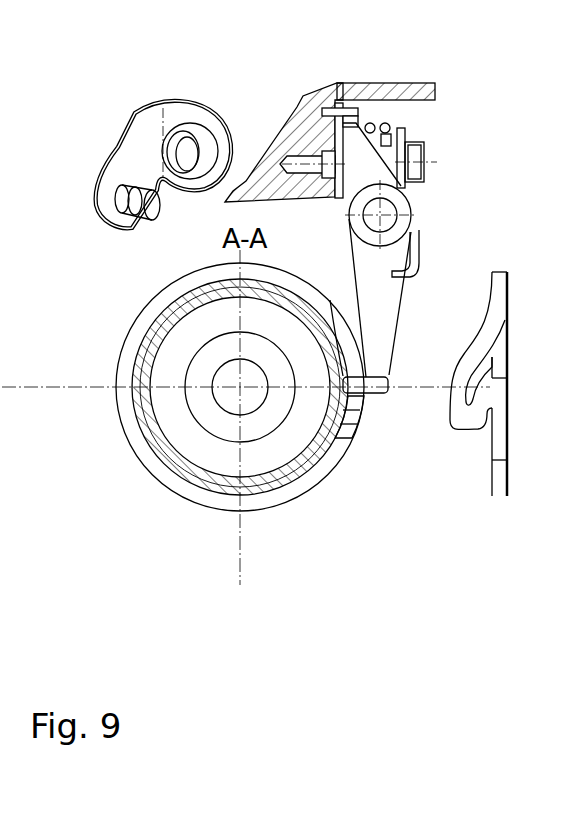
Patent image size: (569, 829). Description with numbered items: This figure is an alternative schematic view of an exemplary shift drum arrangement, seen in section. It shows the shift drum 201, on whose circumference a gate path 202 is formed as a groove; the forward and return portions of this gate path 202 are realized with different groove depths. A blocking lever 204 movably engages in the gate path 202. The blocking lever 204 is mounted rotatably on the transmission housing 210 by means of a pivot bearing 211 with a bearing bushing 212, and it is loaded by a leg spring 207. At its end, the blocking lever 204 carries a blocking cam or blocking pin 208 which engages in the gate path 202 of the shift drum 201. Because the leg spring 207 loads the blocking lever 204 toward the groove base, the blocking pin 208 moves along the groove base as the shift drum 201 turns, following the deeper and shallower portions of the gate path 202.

The shift drum 201 is at (193, 499).
The gate path 202 is at (457, 412).
The blocking lever 204 is at (385, 293).
The leg spring 207 is at (413, 237).
The blocking pin 208 is at (358, 385).
The transmission housing 210 is at (352, 95).
The pivot bearing 211 is at (148, 172).
The bearing bushing 212 is at (387, 146).